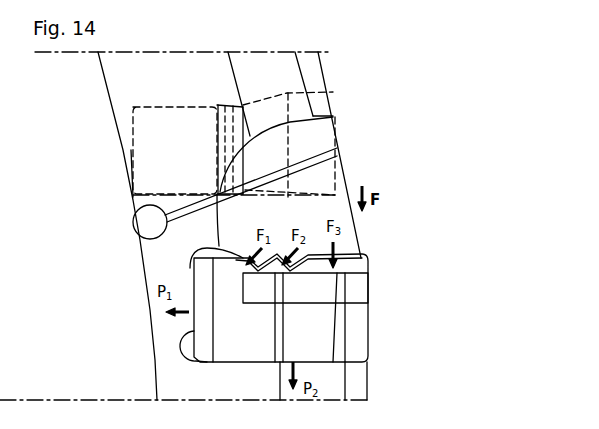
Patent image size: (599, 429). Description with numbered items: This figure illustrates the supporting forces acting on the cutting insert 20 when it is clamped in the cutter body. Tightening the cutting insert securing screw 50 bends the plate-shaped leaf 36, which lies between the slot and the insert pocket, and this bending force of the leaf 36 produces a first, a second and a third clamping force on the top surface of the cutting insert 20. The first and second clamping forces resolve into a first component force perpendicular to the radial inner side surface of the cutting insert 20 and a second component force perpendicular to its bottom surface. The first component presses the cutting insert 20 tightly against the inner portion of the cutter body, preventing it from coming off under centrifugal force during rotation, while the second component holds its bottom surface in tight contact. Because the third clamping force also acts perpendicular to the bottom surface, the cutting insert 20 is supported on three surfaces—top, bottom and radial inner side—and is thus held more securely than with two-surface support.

The cutting insert securing screw 50 is at (320, 135).
The leaf 36 is at (343, 183).
The clamp body 20 is at (355, 322).